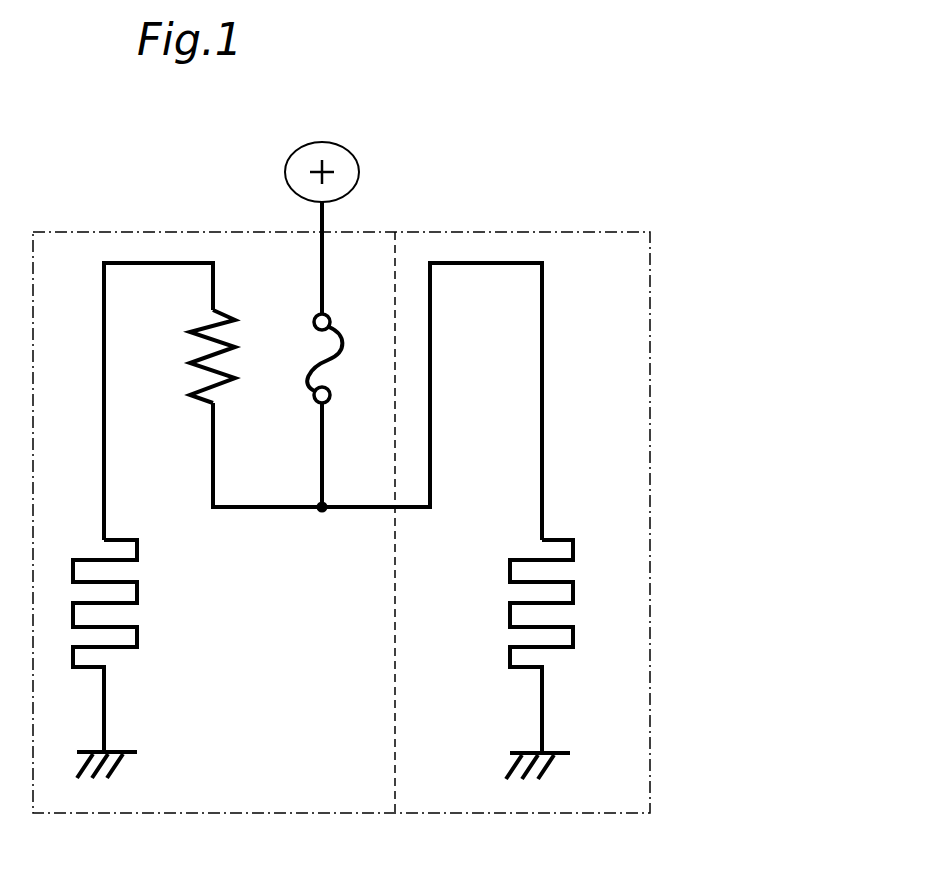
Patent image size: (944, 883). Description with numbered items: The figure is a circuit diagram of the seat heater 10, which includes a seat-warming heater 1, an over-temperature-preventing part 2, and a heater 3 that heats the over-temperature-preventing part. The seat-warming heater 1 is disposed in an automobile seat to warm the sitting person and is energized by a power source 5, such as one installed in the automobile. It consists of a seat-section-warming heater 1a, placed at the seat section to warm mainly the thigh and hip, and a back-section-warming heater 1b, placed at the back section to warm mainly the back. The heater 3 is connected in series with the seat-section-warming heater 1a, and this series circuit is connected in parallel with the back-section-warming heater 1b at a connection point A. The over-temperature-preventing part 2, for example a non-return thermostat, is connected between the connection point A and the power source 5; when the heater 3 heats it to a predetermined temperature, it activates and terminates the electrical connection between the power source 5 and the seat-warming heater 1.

The seat-warming heater 1 is at (323, 659).
The seat-section-warming heater 1a is at (138, 595).
The back-section-warming heater 1b is at (508, 610).
The over-temperature-preventing part 2 is at (350, 333).
The heater for the over-temperature-preventing part 3 is at (185, 323).
The power source 5 is at (353, 167).
The seat heater 10 is at (695, 281).
The connection point A is at (320, 515).